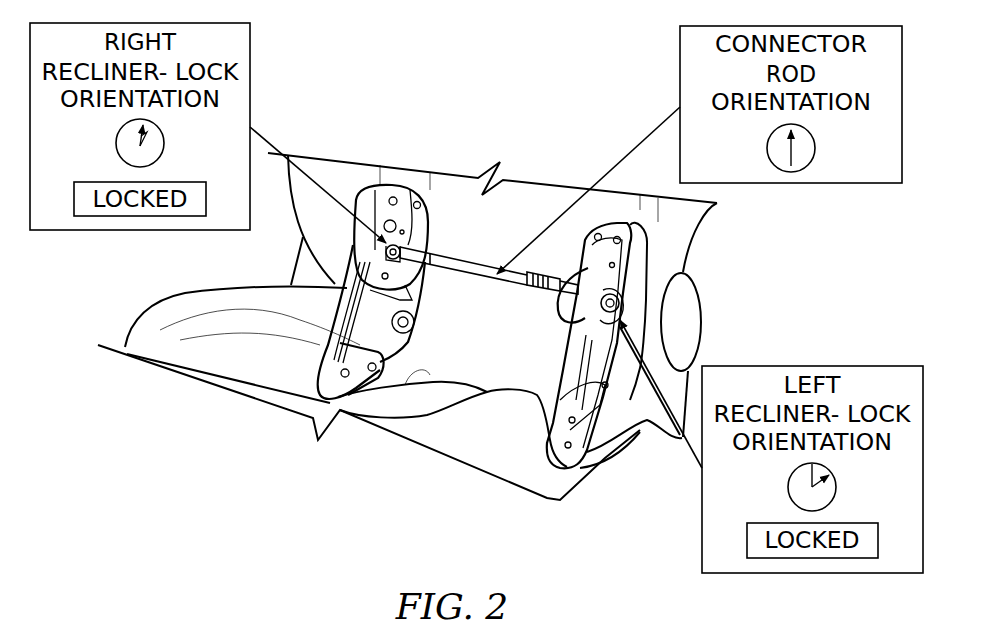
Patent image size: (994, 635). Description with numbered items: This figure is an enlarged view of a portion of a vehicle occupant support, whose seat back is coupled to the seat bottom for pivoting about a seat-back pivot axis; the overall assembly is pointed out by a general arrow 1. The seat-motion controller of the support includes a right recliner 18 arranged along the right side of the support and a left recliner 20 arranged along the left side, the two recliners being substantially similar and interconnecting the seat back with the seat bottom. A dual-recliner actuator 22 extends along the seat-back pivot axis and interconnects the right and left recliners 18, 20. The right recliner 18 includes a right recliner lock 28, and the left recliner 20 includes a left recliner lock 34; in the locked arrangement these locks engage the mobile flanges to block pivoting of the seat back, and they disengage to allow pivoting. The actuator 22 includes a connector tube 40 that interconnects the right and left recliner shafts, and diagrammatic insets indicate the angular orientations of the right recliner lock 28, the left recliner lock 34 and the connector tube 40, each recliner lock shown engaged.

The seat assembly 1 is at (216, 372).
The right recliner 18 is at (364, 196).
The left recliner 20 is at (647, 280).
The dual-recliner actuator 22 is at (489, 254).
The right recliner lock 28 is at (411, 245).
The left recliner lock 34 is at (600, 299).
The connector tube 40 is at (452, 253).